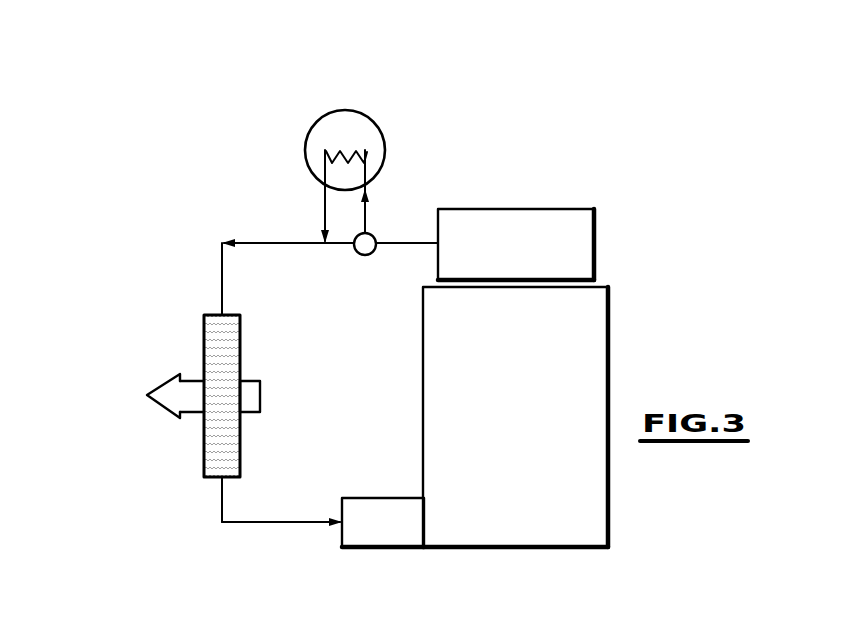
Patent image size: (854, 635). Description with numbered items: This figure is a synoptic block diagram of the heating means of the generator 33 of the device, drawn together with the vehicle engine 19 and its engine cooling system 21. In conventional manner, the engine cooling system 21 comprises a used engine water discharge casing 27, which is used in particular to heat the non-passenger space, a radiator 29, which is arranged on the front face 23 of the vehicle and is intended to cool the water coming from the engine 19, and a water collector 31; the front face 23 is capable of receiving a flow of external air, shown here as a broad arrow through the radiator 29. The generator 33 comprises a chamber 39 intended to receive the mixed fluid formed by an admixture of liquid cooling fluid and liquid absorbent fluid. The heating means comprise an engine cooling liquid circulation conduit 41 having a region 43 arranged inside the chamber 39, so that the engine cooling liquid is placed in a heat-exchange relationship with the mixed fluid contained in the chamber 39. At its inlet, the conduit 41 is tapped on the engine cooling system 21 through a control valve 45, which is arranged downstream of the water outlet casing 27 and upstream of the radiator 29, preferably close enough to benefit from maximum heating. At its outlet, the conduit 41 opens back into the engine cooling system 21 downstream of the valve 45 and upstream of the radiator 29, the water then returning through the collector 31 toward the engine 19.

The engine 19 is at (585, 363).
The engine cooling system 21 is at (184, 288).
The front face 23 is at (158, 415).
The used engine water discharge casing 27 is at (586, 263).
The radiator 29 is at (232, 346).
The water collector 31 is at (380, 530).
The generator 33 is at (356, 123).
The chamber 39 is at (323, 130).
The engine cooling liquid circulation conduit 41 is at (308, 189).
The region 43 is at (353, 152).
The control valve 45 is at (362, 254).